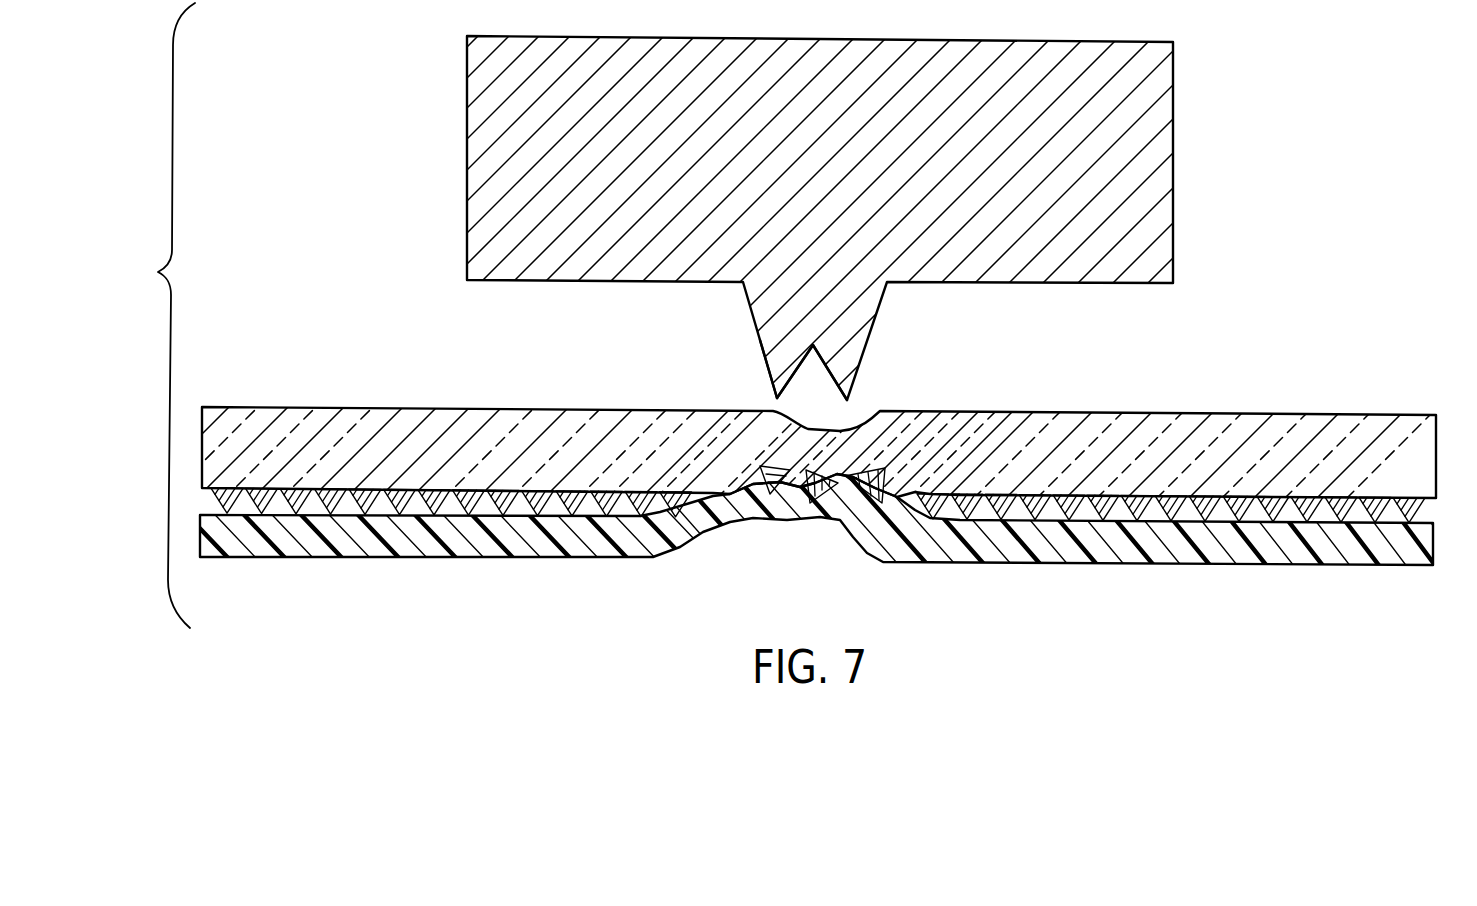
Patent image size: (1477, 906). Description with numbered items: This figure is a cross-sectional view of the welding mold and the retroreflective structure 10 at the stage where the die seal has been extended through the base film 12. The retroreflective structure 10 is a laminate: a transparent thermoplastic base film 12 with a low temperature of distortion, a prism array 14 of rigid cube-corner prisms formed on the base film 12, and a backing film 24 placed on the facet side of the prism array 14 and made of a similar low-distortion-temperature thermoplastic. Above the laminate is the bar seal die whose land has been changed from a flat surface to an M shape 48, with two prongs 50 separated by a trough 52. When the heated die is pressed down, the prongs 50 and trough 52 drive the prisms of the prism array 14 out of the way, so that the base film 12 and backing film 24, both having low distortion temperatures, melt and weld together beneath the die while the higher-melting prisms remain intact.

The retroreflective structure 10 is at (1300, 372).
The base film 12 is at (1190, 413).
The prism array 14 is at (1423, 510).
The backing film 24 is at (1097, 565).
The M shape 48 is at (864, 352).
The prongs 50 is at (777, 398).
The trough 52 is at (813, 370).